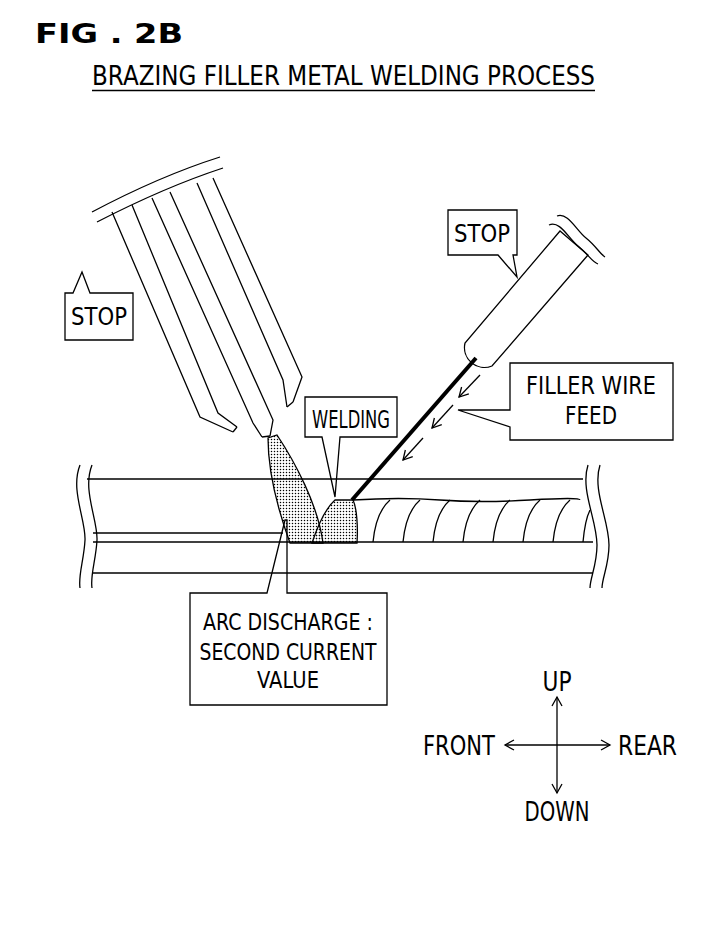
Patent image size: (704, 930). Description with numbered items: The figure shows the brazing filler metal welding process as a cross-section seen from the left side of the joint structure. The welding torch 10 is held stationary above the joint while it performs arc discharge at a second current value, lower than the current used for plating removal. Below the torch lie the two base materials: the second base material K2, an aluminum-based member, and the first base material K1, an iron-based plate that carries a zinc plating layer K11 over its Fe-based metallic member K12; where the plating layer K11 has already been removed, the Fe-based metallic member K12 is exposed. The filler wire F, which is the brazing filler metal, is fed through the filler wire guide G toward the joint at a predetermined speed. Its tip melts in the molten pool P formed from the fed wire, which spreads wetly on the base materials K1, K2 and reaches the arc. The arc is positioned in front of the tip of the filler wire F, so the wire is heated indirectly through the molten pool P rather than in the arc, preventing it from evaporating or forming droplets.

The welding torch 10 is at (236, 212).
The filler wire guide G is at (558, 297).
The filler wire F is at (443, 387).
The second base material K2 is at (70, 475).
The first base material K1 is at (70, 535).
The plating layer K11 is at (163, 538).
The Fe-based metallic member K12 is at (117, 565).
The molten pool P is at (328, 543).